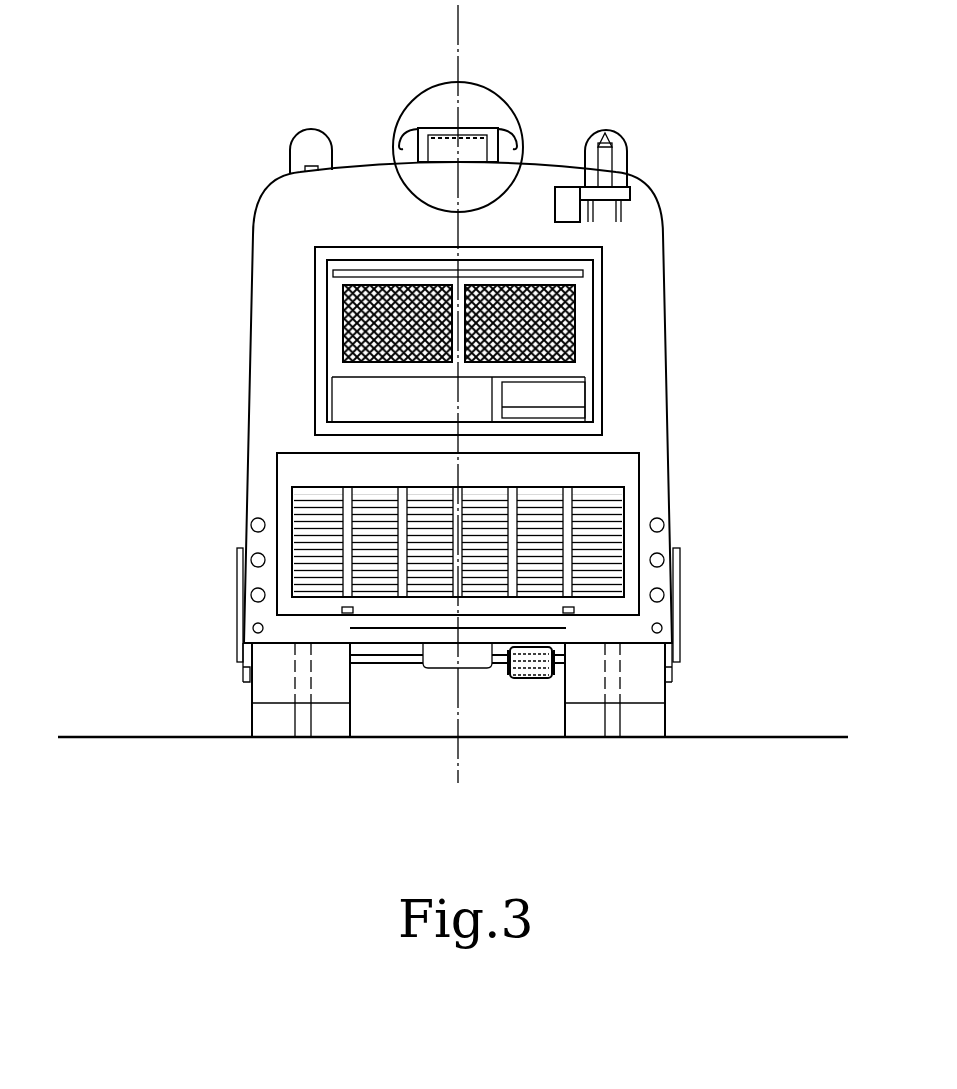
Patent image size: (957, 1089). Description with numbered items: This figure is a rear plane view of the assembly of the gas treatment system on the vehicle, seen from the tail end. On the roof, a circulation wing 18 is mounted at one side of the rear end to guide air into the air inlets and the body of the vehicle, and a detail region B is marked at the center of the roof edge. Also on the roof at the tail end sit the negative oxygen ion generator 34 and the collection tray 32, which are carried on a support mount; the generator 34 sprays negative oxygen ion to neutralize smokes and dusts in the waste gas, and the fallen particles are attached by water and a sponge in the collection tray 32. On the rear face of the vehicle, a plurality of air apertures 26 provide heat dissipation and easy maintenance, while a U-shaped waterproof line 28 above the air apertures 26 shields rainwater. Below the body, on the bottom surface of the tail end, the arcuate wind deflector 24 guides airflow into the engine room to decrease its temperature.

The circulation wings 18 is at (302, 132).
The detail view B is at (470, 82).
The negative oxygen ion generator 34 is at (569, 192).
The collection tray 32 is at (625, 185).
The U-shaped waterproof line 28 is at (566, 273).
The air apertures 26 is at (572, 320).
The wind deflector 24 is at (517, 672).